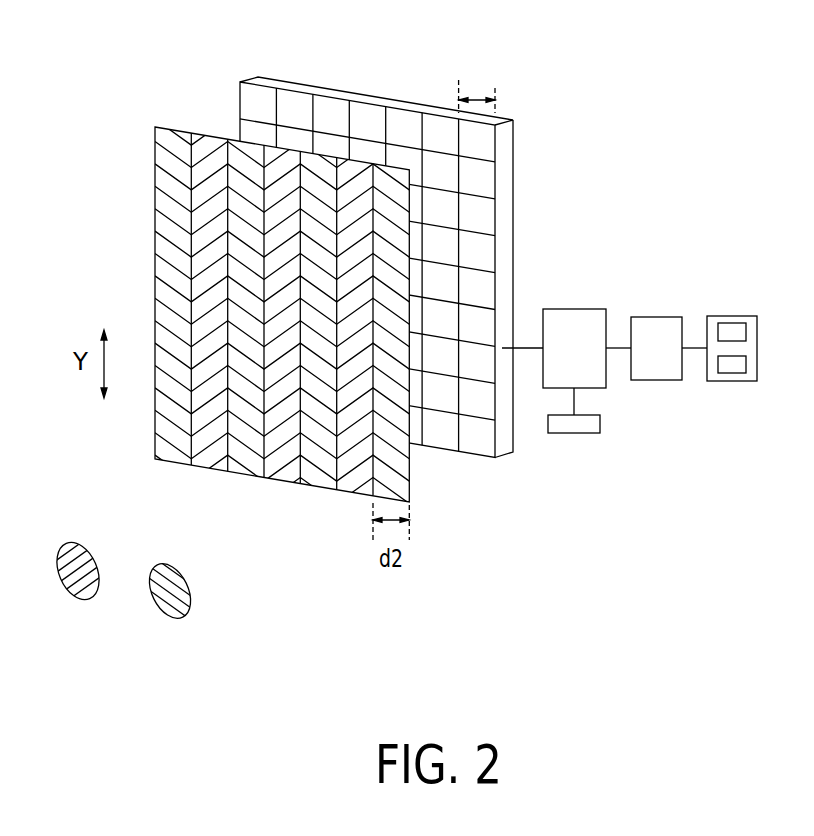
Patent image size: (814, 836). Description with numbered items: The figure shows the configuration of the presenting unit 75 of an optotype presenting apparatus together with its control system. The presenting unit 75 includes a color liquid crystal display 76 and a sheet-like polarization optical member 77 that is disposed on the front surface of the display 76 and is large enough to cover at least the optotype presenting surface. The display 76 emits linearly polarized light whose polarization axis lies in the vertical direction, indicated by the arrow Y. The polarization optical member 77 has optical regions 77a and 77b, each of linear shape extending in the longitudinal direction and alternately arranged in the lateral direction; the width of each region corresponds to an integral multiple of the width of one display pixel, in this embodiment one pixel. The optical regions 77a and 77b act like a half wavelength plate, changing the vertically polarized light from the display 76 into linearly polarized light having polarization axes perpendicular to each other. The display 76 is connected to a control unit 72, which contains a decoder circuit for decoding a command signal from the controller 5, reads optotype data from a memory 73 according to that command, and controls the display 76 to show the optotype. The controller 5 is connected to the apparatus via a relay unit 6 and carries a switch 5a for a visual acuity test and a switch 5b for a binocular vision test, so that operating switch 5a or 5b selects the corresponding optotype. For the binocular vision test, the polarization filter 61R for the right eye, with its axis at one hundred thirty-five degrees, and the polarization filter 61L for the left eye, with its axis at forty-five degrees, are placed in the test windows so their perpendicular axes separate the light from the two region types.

The presenting unit 75 is at (260, 47).
The color liquid crystal display 76 is at (465, 475).
The polarization optical member 77 is at (318, 506).
The optical region 77a is at (172, 243).
The optical region 77b is at (178, 183).
The control unit 72 is at (585, 322).
The memory 73 is at (557, 435).
The relay unit 6 is at (654, 325).
The controller 5 is at (720, 321).
The switch for a visual acuity test 5a is at (745, 332).
The switch for a binocular vision test 5b is at (745, 363).
The polarization filter for a left eye 61L is at (75, 599).
The polarization filter for a right eye 61R is at (187, 617).